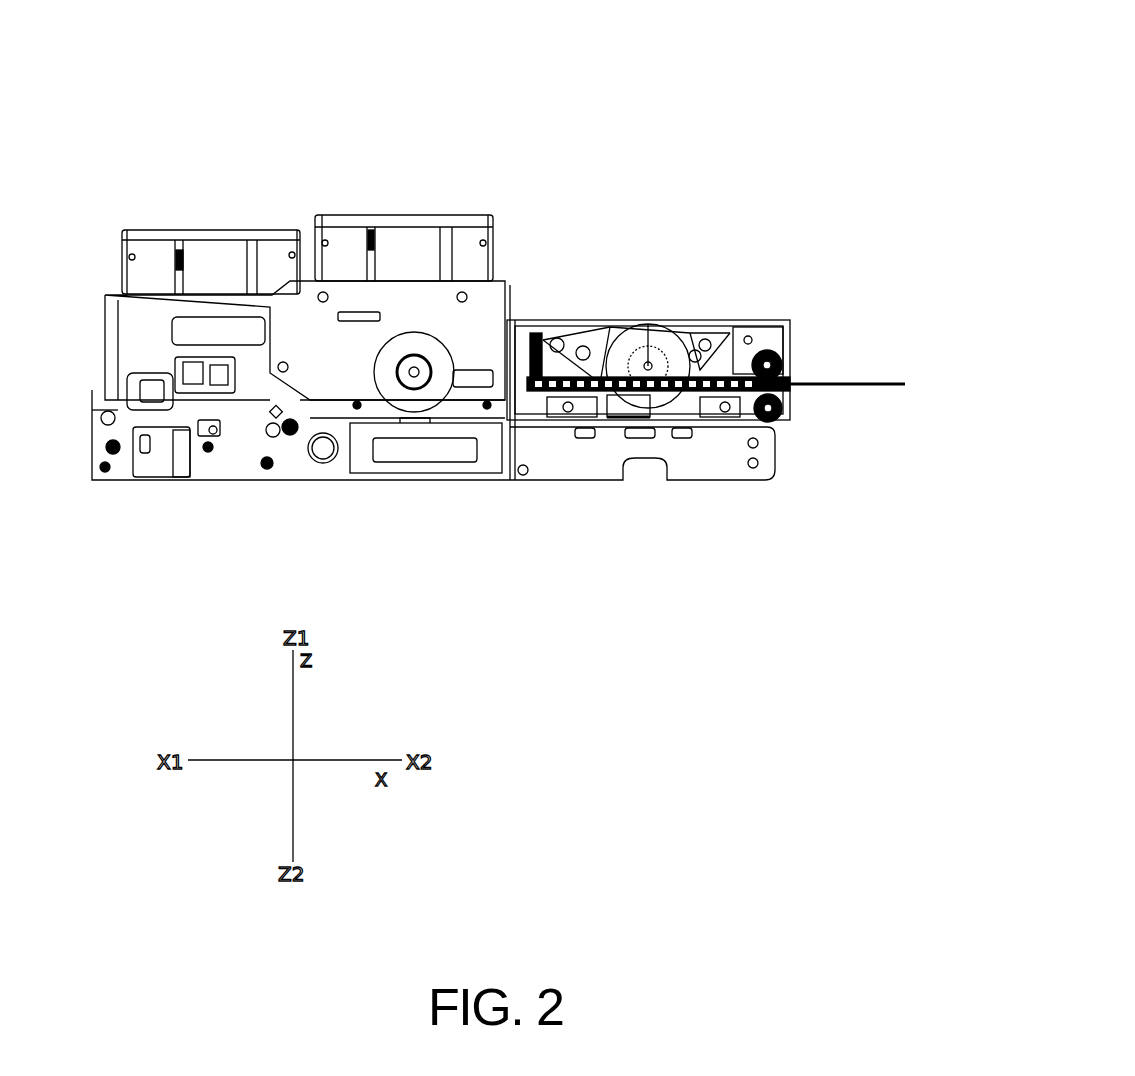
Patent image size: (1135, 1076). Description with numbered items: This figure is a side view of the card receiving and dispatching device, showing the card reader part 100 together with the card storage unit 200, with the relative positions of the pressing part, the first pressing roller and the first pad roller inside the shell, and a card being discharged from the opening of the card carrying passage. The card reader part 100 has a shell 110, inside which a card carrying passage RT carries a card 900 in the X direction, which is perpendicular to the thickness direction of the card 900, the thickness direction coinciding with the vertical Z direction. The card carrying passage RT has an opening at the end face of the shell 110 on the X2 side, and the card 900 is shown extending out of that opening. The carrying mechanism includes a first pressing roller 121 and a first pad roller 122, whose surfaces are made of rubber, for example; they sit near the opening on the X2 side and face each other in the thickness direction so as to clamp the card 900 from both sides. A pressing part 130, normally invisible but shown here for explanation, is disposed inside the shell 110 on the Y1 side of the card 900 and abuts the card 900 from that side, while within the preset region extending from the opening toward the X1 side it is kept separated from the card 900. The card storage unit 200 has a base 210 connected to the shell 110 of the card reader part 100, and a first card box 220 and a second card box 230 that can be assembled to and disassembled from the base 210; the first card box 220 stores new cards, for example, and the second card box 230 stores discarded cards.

The card reader part 100 is at (626, 273).
The shell 110 is at (617, 457).
The first pressing roller 121 is at (768, 335).
The first pad roller 122 is at (772, 422).
The pressing part 130 is at (596, 390).
The card carrying passage RT is at (655, 420).
The card storage unit 200 is at (292, 210).
The base 210 is at (240, 450).
The first card box 220 is at (212, 260).
The second card box 230 is at (418, 452).
The card 900 is at (836, 384).